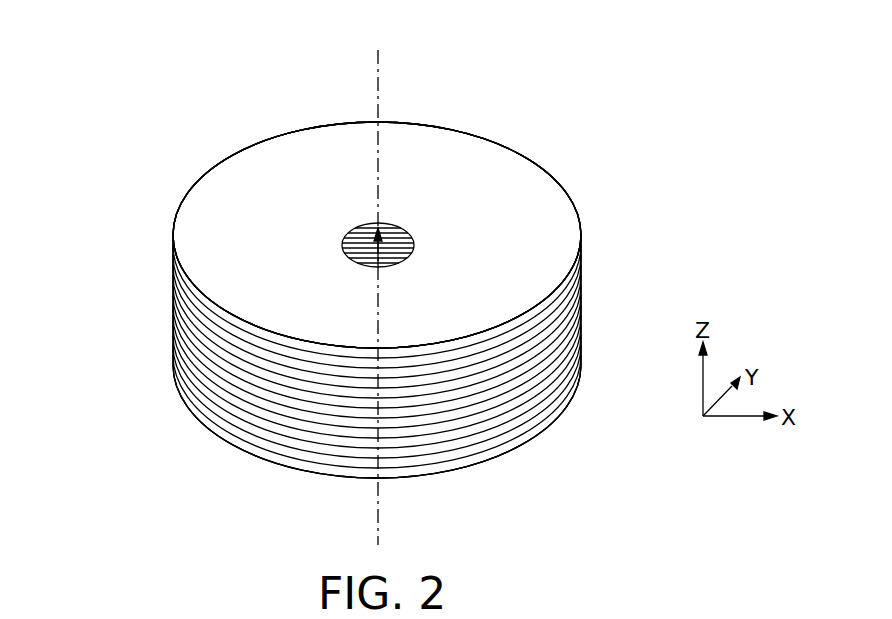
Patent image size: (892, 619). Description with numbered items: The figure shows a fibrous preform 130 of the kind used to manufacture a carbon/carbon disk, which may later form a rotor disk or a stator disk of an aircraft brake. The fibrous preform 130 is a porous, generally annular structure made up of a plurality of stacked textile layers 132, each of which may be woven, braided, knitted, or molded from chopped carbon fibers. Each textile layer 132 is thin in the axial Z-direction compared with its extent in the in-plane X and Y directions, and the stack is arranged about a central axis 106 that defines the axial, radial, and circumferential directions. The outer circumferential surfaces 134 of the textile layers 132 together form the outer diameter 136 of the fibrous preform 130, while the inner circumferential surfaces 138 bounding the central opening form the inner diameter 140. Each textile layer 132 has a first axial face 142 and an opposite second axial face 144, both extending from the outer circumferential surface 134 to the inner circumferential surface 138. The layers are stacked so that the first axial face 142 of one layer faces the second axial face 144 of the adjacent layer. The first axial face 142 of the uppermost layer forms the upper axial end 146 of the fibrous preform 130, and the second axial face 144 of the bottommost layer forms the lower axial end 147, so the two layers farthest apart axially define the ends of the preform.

The central axis 106 is at (379, 70).
The fibrous preform 130 is at (399, 270).
The textile layers 132 is at (460, 141).
The outer circumferential surface 134 is at (243, 153).
The outer diameter 136 is at (585, 195).
The inner circumferential surface 138 is at (413, 232).
The inner diameter 140 is at (366, 267).
The first axial face 142 is at (290, 281).
The second axial face 144 is at (581, 306).
The upper axial end 146 is at (302, 122).
The lower axial end 147 is at (297, 488).